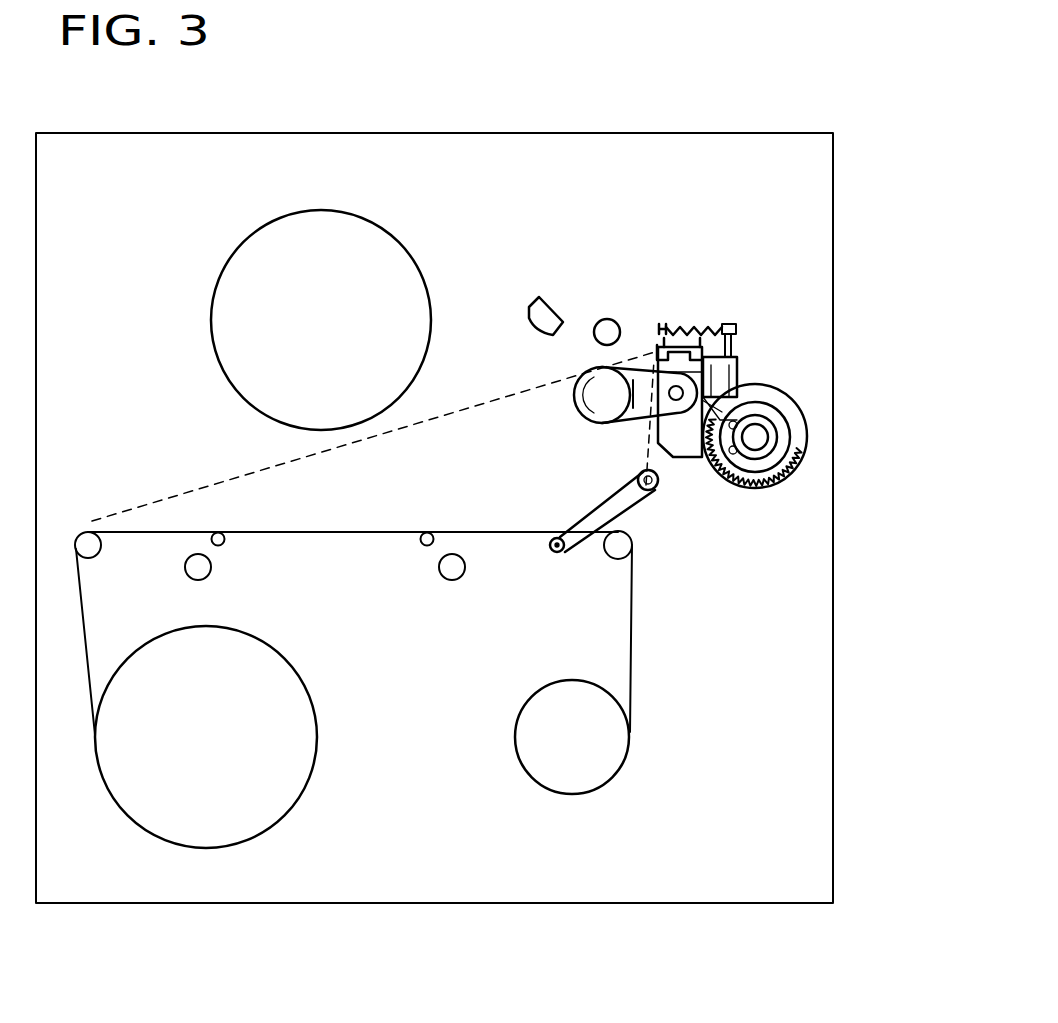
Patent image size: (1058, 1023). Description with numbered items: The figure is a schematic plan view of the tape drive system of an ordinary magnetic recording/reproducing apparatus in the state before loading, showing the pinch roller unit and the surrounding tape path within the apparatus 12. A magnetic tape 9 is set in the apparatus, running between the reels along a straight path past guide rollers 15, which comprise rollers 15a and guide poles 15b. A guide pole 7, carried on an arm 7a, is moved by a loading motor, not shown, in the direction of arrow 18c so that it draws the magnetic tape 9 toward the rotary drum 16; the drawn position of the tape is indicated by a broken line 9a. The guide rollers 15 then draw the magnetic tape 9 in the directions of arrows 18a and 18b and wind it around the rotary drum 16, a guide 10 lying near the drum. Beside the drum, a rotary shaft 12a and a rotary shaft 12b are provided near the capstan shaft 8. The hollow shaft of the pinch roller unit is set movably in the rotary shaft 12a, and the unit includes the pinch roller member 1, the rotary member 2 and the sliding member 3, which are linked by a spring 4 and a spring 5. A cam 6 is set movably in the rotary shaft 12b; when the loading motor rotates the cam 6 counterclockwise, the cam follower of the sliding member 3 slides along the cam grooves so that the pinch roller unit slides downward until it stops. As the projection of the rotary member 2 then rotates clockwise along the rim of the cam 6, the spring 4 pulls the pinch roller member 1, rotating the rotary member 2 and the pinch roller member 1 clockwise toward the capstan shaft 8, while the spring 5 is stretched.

The pinch roller member 1 is at (608, 412).
The rotary member 2 is at (671, 465).
The sliding member 3 is at (742, 378).
The spring 4 is at (700, 326).
The spring 5 is at (673, 323).
The cam 6 is at (758, 492).
The guide pole 7 is at (556, 553).
The arm portion 7a is at (648, 358).
The capstan shaft 8 is at (608, 318).
The magnetic tape 9 is at (632, 662).
The broken line 9a is at (333, 441).
The guide 10 is at (571, 372).
The cassette housing 12 is at (428, 905).
The rotary shaft 12a is at (676, 400).
The rotary shaft 12b is at (757, 437).
The guide rollers 15 is at (294, 586).
The rollers 15a is at (186, 568).
The guide poles 15b is at (222, 533).
The rotary drum 16 is at (374, 226).
The arrow 18a is at (192, 485).
The arrow 18b is at (453, 473).
The arrow 18c is at (569, 394).